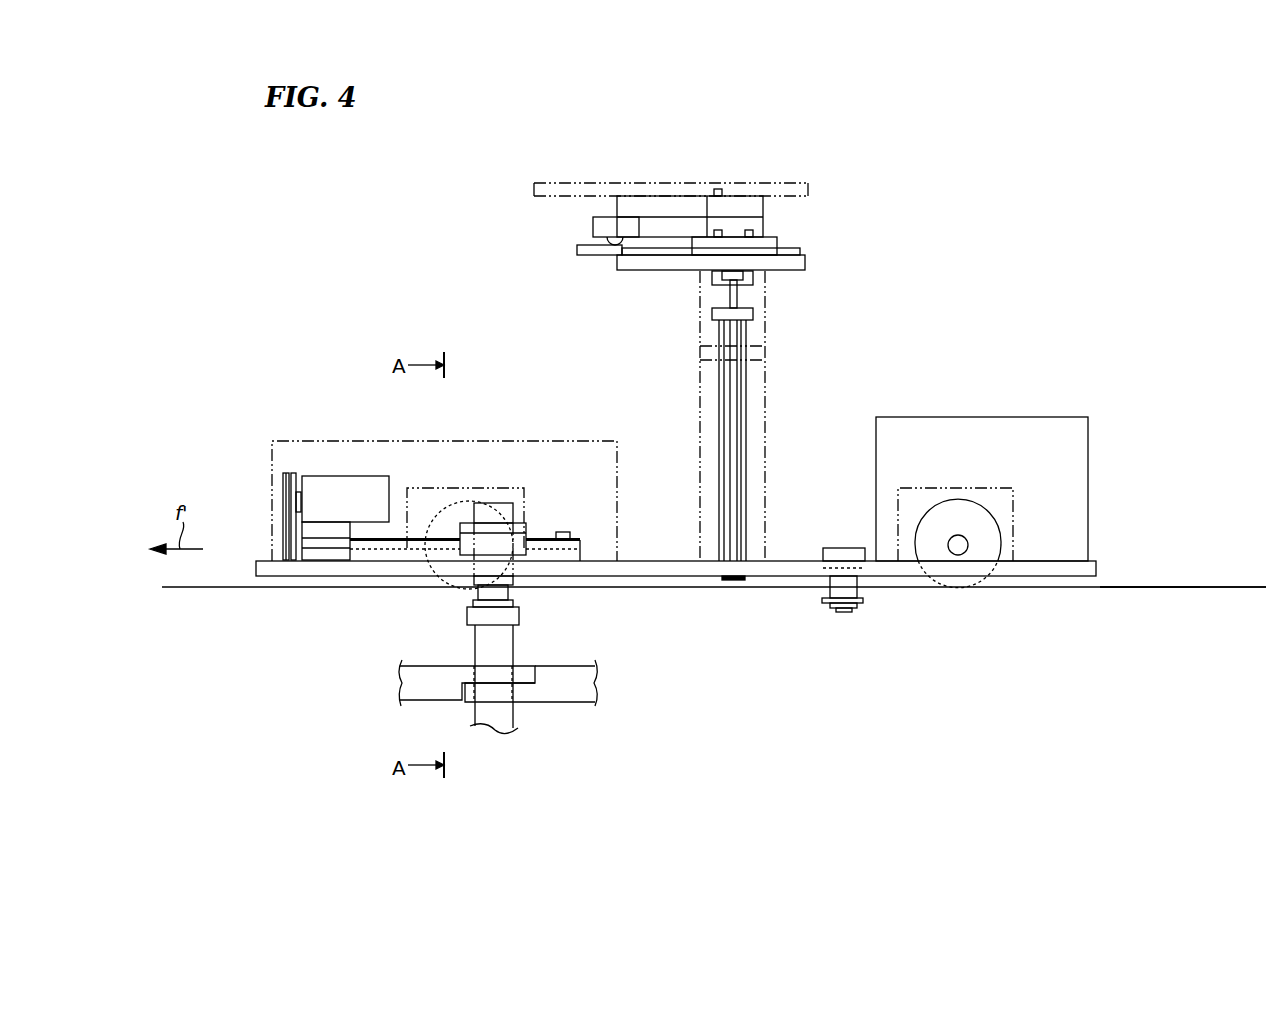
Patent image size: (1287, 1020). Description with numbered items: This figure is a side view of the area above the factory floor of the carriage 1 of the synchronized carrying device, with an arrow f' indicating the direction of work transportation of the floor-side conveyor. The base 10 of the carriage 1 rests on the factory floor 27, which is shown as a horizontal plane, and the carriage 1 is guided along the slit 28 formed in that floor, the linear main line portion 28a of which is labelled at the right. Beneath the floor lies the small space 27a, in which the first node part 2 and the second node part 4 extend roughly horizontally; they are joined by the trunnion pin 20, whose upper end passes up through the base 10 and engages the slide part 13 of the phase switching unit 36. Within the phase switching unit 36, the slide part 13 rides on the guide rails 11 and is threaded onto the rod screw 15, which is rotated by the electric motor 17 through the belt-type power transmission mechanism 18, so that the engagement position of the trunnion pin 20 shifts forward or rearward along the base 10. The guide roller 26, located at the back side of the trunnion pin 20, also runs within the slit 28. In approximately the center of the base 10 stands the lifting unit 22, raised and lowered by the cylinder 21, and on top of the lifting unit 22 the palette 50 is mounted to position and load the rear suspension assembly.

The carriage 1 is at (654, 571).
The first node part 2 is at (434, 675).
The second node part 4 is at (565, 695).
The base 10 is at (1066, 572).
The guide rails 11 is at (403, 548).
The slide part 13 is at (522, 528).
The rod screw 15 is at (387, 547).
The electric motor 17 is at (345, 477).
The belt-type power transmission mechanism 18 is at (285, 485).
The trunnion pin 20 is at (505, 507).
The cylinder 21 is at (742, 333).
The lifting unit 22 is at (757, 208).
The guide roller 26 is at (846, 592).
The factory floor 27 is at (1180, 587).
The small space 27a is at (1185, 650).
The slit 28 is at (1171, 535).
The main line portion 28a is at (1140, 605).
The phase switching unit 36 is at (302, 437).
The palette 50 is at (795, 188).